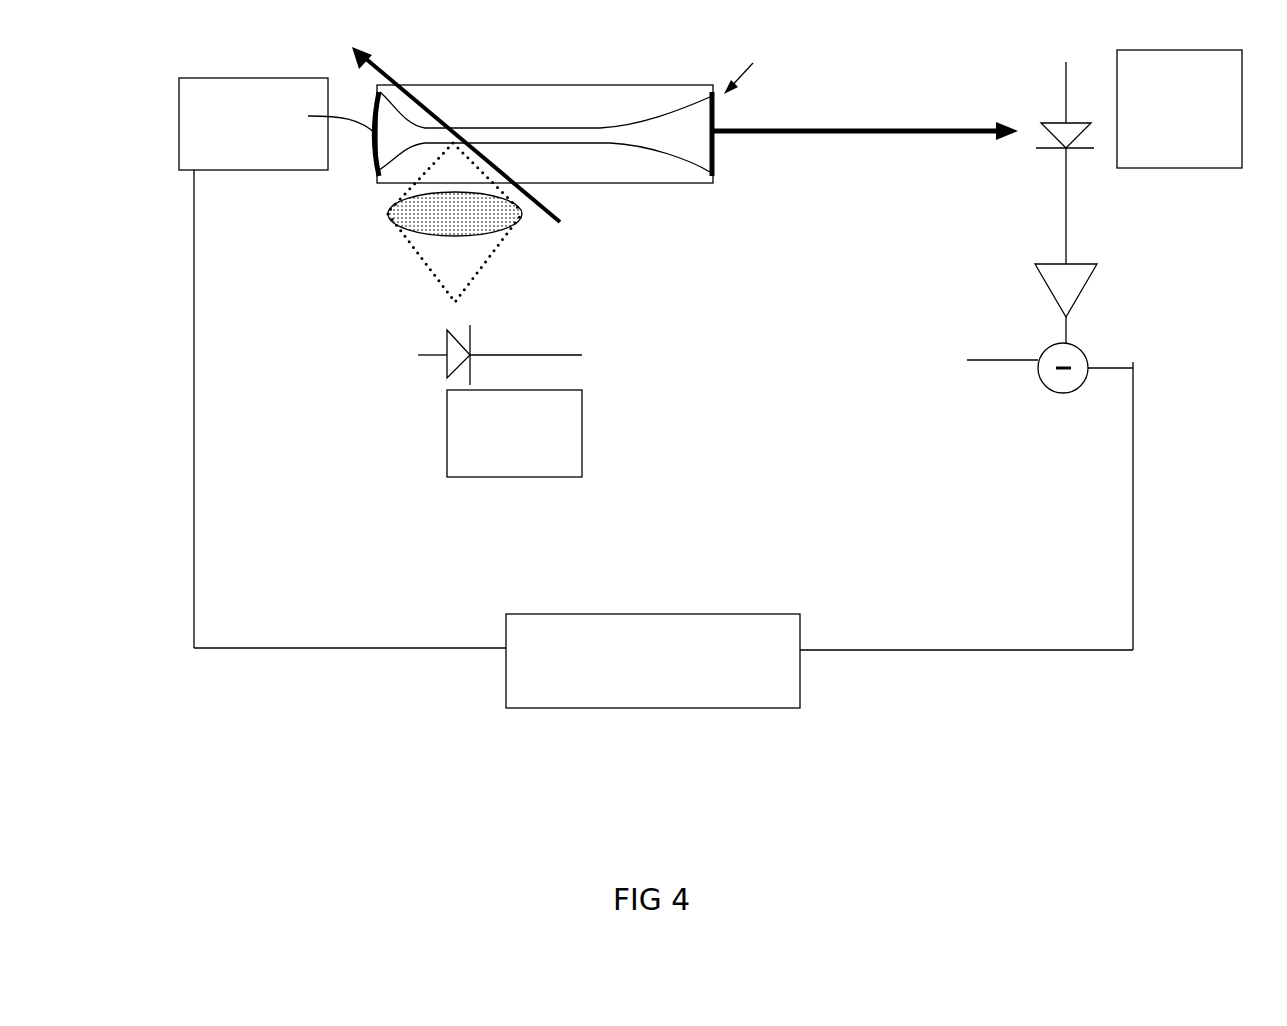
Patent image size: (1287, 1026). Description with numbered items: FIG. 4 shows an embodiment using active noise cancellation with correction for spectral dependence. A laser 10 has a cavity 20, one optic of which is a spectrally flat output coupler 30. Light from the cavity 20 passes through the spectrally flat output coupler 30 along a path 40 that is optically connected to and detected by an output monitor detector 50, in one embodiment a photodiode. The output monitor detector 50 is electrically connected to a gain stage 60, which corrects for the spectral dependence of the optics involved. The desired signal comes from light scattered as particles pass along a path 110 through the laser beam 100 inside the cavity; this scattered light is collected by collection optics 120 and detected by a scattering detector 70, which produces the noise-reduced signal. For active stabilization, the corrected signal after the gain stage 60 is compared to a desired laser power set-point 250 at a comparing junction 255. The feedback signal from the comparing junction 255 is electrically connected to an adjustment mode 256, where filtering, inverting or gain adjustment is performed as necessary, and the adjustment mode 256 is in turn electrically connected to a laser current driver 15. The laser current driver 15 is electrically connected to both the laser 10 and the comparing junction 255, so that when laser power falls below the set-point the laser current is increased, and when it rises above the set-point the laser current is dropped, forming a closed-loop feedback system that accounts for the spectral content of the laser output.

The laser 10 is at (550, 28).
The laser current driver 15 is at (278, 124).
The cavity 20 is at (640, 100).
The spectrally flat output coupler 30 is at (713, 153).
The path 40 is at (860, 137).
The output monitor detector 50 is at (1172, 177).
The gain stage 60 is at (1078, 307).
The scattering detector 70 is at (582, 430).
The laser beam 100 is at (640, 157).
The path 110 is at (546, 213).
The collection optics 120 is at (292, 243).
The laser power set-point 250 is at (930, 418).
The comparing junction 255 is at (1060, 395).
The adjustment mode 256 is at (672, 688).